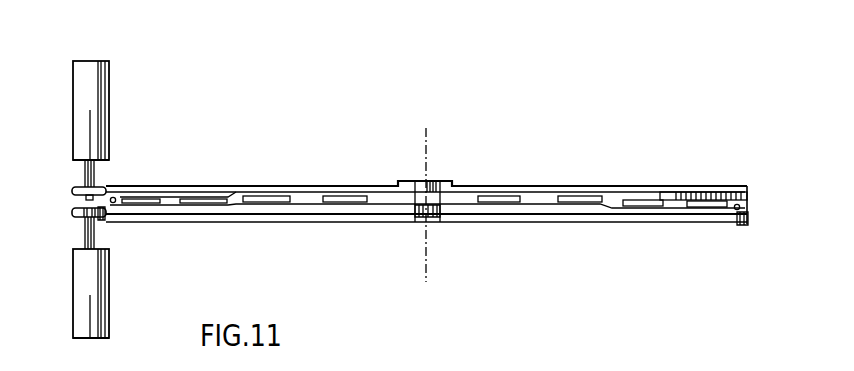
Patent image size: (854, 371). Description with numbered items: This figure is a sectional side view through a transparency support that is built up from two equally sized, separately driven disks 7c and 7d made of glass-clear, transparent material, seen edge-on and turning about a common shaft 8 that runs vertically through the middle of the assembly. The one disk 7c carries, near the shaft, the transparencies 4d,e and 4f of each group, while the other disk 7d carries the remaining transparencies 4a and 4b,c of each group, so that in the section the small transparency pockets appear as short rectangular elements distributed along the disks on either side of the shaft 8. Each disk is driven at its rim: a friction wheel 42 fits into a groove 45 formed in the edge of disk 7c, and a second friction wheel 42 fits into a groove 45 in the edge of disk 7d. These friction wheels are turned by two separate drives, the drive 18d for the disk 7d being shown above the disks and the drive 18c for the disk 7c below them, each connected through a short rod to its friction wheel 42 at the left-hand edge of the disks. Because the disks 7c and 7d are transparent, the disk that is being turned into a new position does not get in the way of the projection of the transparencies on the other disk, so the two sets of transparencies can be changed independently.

The drive for disk 7d 18d is at (103, 80).
The drive for disk 7c 18c is at (105, 337).
The friction wheel 42 is at (76, 191).
The disk 7c is at (303, 212).
The disk 7d is at (698, 197).
The groove 45 is at (748, 196).
The shaft 8 is at (428, 147).
The transparency 4f is at (500, 204).
The transparencies 4d,e is at (580, 205).
The transparencies 4b,c is at (648, 203).
The transparency 4a is at (716, 205).